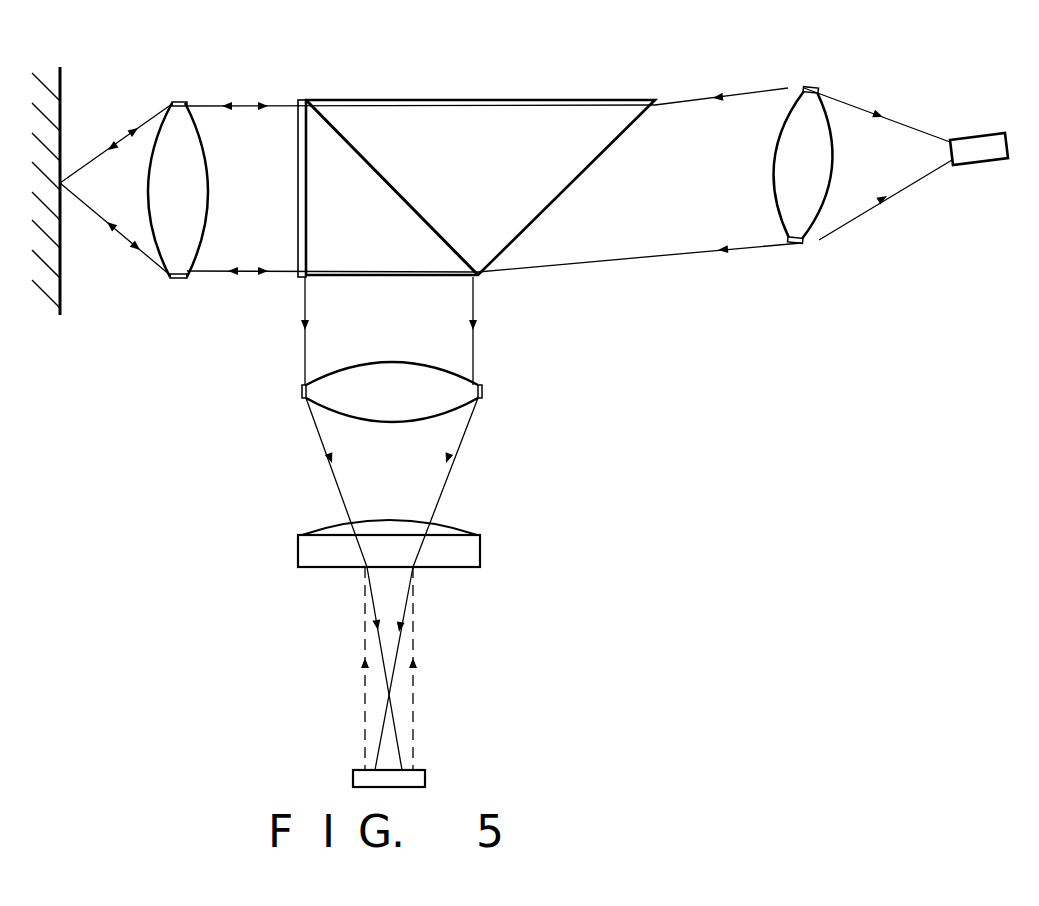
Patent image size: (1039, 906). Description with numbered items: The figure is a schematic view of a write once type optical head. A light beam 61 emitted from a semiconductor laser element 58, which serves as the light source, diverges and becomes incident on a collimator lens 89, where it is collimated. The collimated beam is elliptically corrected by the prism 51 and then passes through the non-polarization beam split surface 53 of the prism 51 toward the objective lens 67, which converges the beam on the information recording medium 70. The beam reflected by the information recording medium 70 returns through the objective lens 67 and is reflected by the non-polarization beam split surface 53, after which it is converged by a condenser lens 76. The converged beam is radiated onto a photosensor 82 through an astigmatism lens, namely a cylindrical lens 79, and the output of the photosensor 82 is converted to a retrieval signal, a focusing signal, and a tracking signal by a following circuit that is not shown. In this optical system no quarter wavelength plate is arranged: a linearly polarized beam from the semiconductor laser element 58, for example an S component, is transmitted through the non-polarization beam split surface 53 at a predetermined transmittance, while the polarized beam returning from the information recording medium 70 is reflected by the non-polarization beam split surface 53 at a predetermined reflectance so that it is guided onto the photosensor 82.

The prism 51 is at (377, 100).
The non-polarization beam split surface 53 is at (300, 100).
The semiconductor laser element 58 is at (975, 136).
The light beam 61 is at (207, 278).
The objective lens 67 is at (174, 101).
The information recording medium 70 is at (47, 70).
The condenser lens 76 is at (486, 390).
The cylindrical lens 79 is at (484, 548).
The photosensor 82 is at (428, 775).
The collimator lens 89 is at (795, 85).